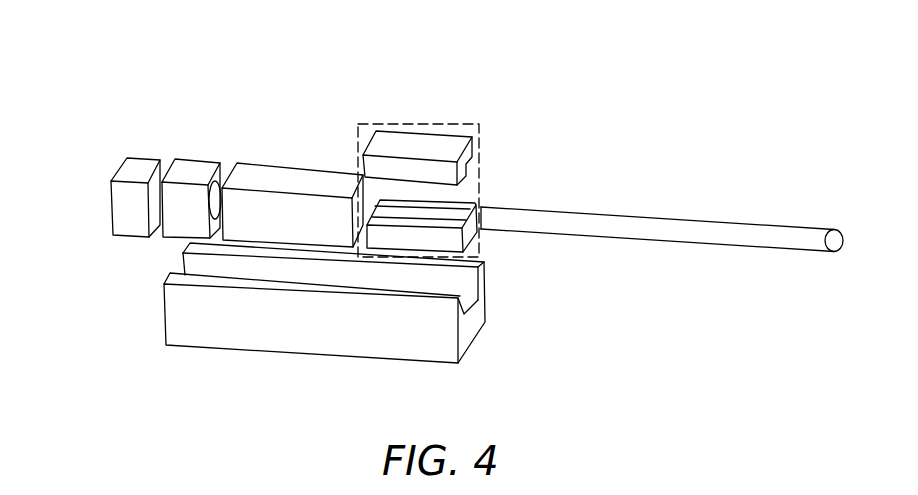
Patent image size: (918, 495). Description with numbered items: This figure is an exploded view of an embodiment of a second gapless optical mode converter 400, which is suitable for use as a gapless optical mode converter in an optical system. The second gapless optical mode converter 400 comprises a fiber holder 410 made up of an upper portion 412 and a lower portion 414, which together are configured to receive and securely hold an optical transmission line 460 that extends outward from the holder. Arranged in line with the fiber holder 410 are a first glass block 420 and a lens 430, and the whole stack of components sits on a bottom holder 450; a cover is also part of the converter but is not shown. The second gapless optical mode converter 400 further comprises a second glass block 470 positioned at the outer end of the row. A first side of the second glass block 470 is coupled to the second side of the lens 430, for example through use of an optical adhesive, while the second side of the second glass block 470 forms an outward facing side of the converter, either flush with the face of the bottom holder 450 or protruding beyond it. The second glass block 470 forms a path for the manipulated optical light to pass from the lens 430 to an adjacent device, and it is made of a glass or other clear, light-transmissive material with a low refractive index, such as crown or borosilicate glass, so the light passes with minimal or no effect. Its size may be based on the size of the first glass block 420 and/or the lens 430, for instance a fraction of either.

The second gapless optical mode converter 400 is at (92, 46).
The fiber holder 410 is at (400, 121).
The upper portion 412 is at (478, 145).
The lower portion 414 is at (484, 210).
The first glass block 420 is at (250, 162).
The lens 430 is at (186, 159).
The bottom holder 450 is at (488, 318).
The optical transmission line 460 is at (557, 210).
The second glass block 470 is at (137, 156).